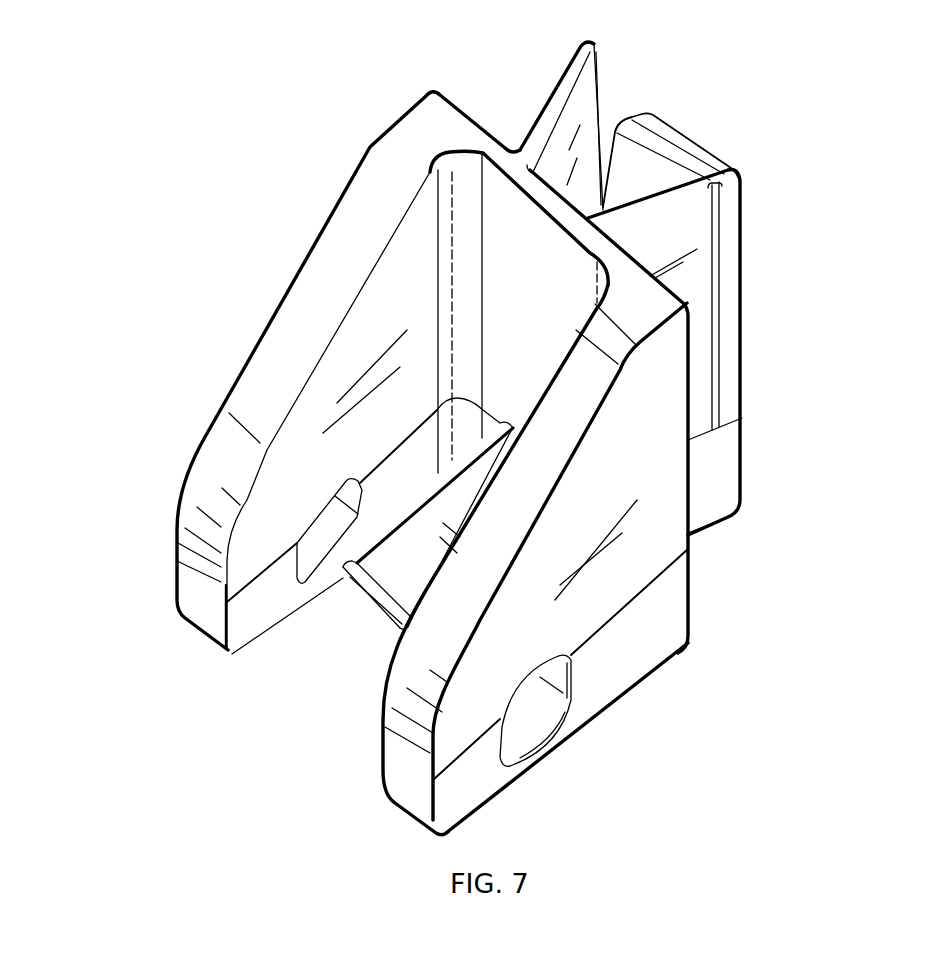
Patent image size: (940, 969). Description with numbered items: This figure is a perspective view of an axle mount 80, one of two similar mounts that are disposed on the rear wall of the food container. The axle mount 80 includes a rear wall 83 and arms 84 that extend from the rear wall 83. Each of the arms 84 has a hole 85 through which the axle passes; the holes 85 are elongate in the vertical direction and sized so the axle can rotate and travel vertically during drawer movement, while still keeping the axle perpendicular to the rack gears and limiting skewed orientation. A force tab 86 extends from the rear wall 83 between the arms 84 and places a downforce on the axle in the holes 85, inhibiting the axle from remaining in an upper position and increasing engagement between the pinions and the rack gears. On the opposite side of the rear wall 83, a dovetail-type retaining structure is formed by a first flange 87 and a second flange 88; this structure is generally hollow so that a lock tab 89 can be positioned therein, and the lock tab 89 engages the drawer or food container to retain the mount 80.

The axle mount 80 is at (858, 180).
The rear wall 83 is at (525, 268).
The arms 84 is at (310, 318).
The hole 85 is at (319, 540).
The force tab 86 is at (405, 614).
The first flange 87 is at (557, 90).
The second flange 88 is at (717, 468).
The lock tab 89 is at (683, 147).